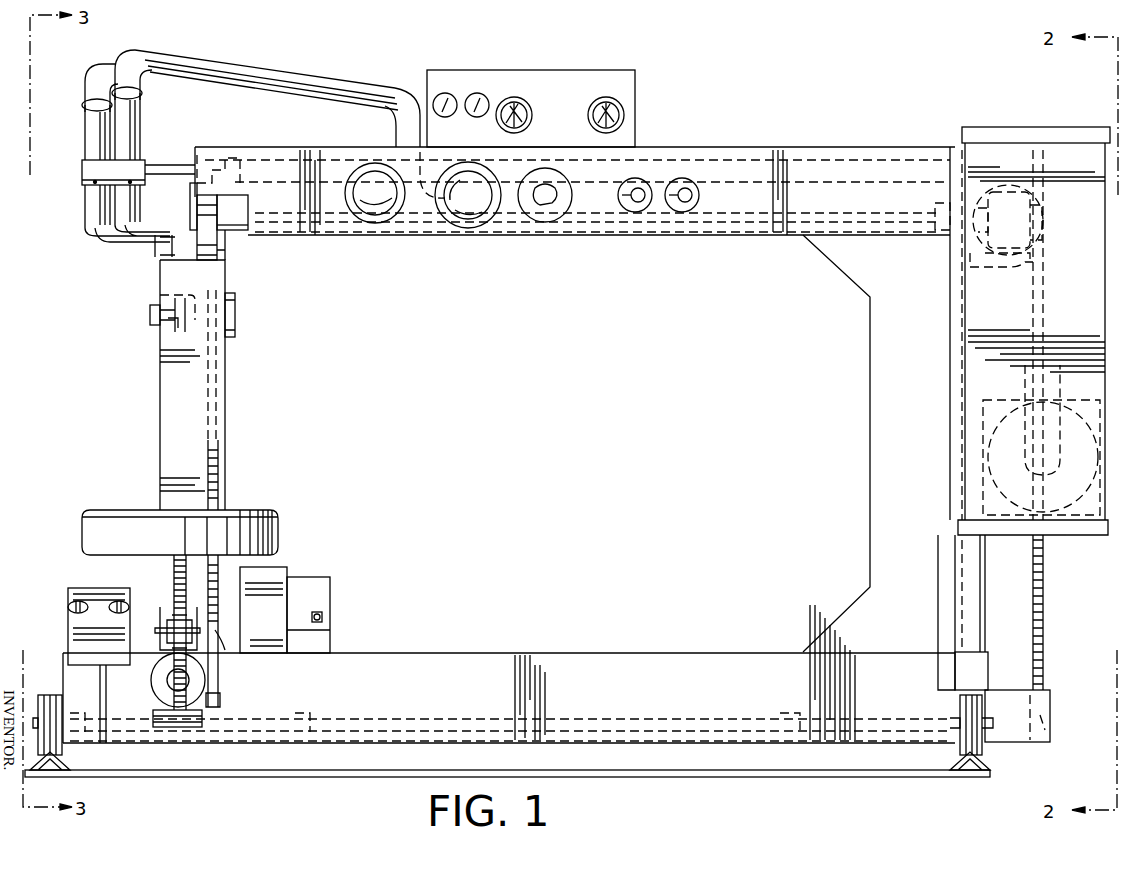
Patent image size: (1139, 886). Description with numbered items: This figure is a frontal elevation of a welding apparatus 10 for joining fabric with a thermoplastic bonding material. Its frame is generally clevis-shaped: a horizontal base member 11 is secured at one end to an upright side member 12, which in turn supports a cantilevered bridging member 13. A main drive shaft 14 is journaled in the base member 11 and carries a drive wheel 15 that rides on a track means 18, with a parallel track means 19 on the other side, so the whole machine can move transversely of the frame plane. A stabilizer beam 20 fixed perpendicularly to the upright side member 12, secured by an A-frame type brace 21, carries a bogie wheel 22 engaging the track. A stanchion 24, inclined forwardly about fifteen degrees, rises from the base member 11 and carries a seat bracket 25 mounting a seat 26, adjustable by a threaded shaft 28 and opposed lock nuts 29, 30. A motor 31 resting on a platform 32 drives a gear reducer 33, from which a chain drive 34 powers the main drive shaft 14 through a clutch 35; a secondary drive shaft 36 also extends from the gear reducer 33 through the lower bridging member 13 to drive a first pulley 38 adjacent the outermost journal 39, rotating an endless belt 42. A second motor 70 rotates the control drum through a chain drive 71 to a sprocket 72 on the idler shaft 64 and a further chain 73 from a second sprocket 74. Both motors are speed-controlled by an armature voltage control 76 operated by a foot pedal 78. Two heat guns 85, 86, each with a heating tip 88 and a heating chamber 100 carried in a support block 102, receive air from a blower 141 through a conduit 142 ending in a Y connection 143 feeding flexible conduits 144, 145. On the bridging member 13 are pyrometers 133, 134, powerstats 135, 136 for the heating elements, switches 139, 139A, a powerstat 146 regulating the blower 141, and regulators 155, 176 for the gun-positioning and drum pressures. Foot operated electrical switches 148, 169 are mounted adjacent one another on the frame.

The welding apparatus 10 is at (788, 104).
The horizontal base member 11 is at (515, 655).
The upright side member 12 is at (875, 398).
The bridging member 13 is at (674, 148).
The main drive shaft 14 is at (605, 718).
The drive wheel 15 is at (46, 695).
The track means 18 is at (62, 768).
The track means 19 is at (982, 766).
The stabilizer beam 20 is at (968, 676).
The A-frame type brace 21 is at (985, 580).
The bogie wheel 22 is at (960, 750).
The stanchion 24 is at (172, 392).
The seat bracket 25 is at (165, 628).
The seat 26 is at (282, 525).
The threaded shaft 28 is at (178, 555).
The lock nut 29 is at (222, 658).
The lock nut 30 is at (165, 648).
The motor 31 is at (1040, 187).
The platform 32 is at (1048, 272).
The gear reducer 33 is at (1040, 228).
The chain drive 34 is at (1046, 555).
The clutch 35 is at (1050, 705).
The secondary drive shaft 36 is at (814, 213).
The first pulley 38 is at (228, 238).
The outermost journal 39 is at (190, 192).
The endless belt 42 is at (222, 250).
The idler shaft 64 is at (165, 328).
The motor 70 is at (160, 684).
The chain drive 71 is at (218, 680).
The sprocket 72 is at (236, 300).
The chain 73 is at (158, 318).
The second sprocket 74 is at (158, 293).
The armature voltage control 76 is at (277, 645).
The foot pedal 78 is at (282, 582).
The heat gun 85 is at (80, 114).
The heat gun 86 is at (143, 113).
The heating tip 88 is at (148, 256).
The heating chamber 100 is at (95, 150).
The support block 102 is at (80, 188).
The pyrometer 133 is at (518, 97).
The pyrometer 134 is at (614, 100).
The powerstat 135 is at (381, 222).
The powerstat 136 is at (478, 220).
The switch 139 is at (447, 92).
The switch 139A is at (478, 92).
The blower 141 is at (1000, 425).
The conduit 142 is at (438, 160).
The Y connection 143 is at (395, 145).
The flexible conduit 144 is at (100, 66).
The flexible conduit 145 is at (188, 58).
The powerstat 146 is at (560, 218).
The foot operated electrical switch 148 is at (116, 602).
The regulator 155 is at (640, 212).
The foot operated electrical switch 169 is at (74, 602).
The regulator 176 is at (690, 212).